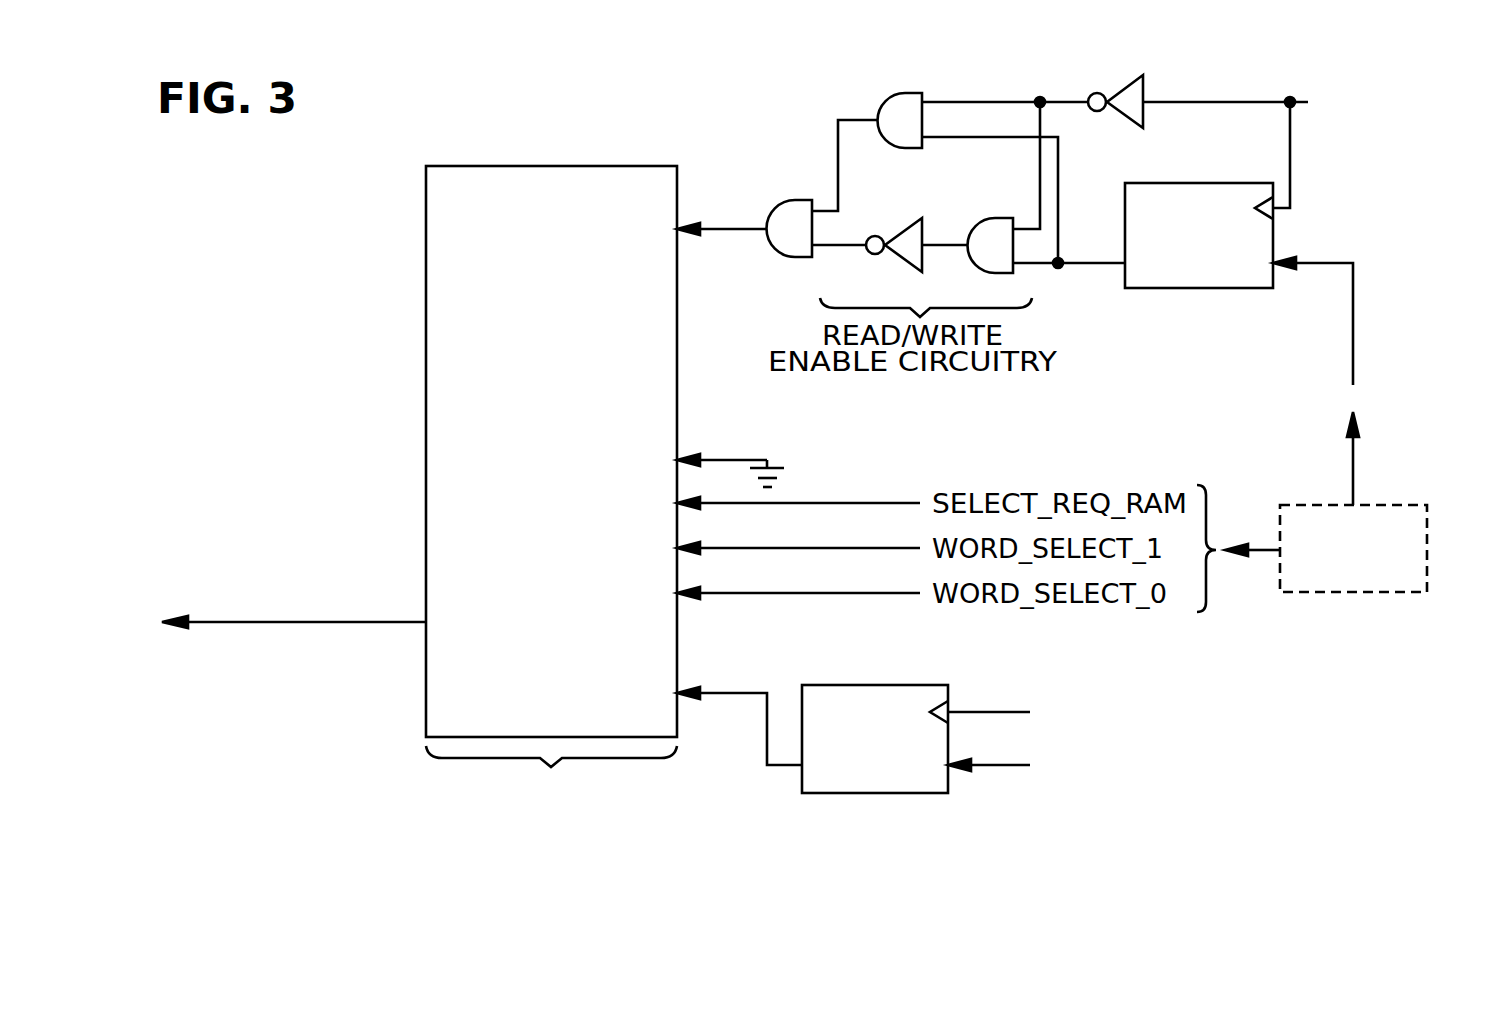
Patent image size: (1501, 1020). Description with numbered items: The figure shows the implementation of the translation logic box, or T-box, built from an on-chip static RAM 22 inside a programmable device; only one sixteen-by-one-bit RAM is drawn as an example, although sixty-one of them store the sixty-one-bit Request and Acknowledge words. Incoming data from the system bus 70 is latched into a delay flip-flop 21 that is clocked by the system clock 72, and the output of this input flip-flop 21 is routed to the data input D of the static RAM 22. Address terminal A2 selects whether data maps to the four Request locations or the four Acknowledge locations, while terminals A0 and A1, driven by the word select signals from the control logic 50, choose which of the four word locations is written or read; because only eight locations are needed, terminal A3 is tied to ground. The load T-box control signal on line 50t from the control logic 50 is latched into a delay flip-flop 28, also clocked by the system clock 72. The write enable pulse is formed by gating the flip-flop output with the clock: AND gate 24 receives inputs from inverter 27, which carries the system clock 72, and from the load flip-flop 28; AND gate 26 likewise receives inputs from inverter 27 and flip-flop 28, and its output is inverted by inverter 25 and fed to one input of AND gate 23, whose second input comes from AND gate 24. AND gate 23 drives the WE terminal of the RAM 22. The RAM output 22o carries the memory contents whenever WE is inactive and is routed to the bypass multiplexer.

The static RAM 22 is at (548, 166).
The T-box out signal 22o is at (242, 622).
The AND gate 23 is at (782, 198).
The AND gate 24 is at (893, 93).
The inverter 25 is at (903, 233).
The AND gate 26 is at (993, 218).
The inverter 27 is at (1117, 95).
The delay flip-flop 28 is at (1182, 183).
The control logic 50 is at (1368, 593).
The load T-box line 50t is at (1333, 260).
The delay flip-flop 21 is at (893, 685).
The system bus 70 is at (990, 767).
The system clock 72 is at (1217, 102).